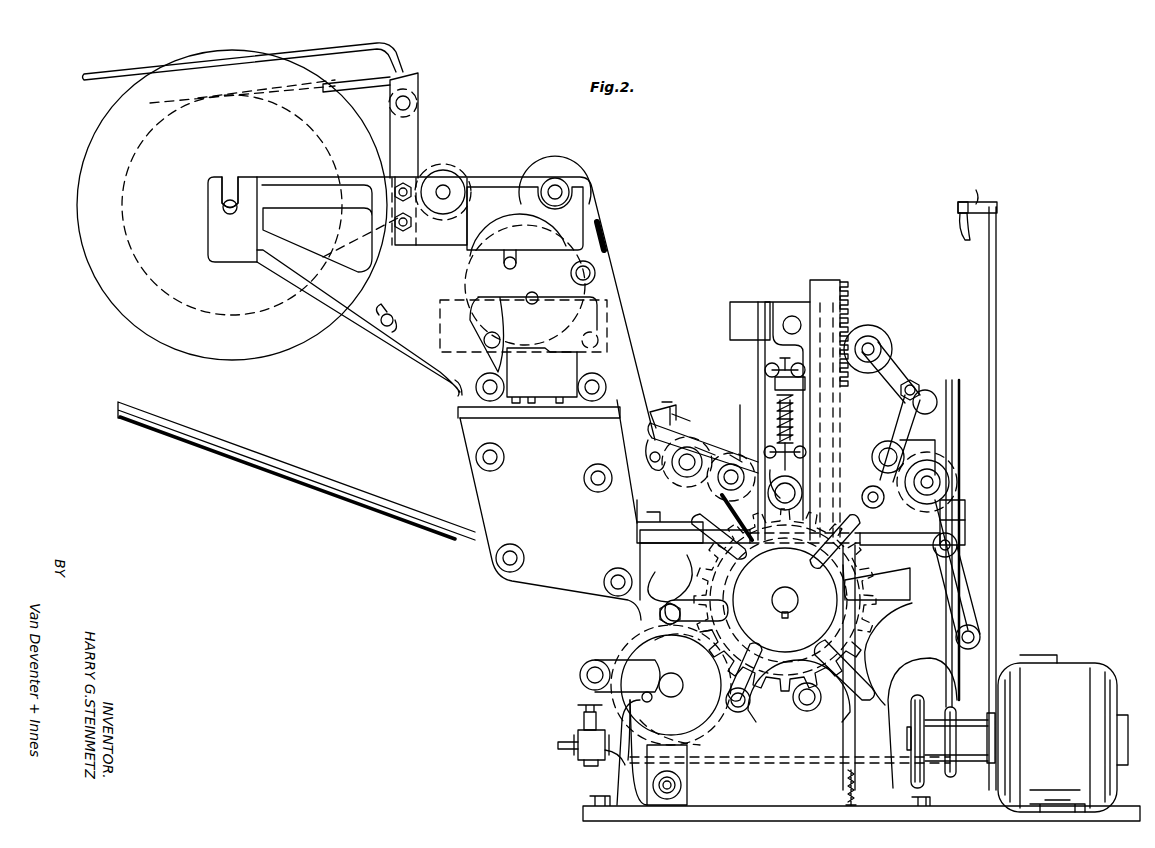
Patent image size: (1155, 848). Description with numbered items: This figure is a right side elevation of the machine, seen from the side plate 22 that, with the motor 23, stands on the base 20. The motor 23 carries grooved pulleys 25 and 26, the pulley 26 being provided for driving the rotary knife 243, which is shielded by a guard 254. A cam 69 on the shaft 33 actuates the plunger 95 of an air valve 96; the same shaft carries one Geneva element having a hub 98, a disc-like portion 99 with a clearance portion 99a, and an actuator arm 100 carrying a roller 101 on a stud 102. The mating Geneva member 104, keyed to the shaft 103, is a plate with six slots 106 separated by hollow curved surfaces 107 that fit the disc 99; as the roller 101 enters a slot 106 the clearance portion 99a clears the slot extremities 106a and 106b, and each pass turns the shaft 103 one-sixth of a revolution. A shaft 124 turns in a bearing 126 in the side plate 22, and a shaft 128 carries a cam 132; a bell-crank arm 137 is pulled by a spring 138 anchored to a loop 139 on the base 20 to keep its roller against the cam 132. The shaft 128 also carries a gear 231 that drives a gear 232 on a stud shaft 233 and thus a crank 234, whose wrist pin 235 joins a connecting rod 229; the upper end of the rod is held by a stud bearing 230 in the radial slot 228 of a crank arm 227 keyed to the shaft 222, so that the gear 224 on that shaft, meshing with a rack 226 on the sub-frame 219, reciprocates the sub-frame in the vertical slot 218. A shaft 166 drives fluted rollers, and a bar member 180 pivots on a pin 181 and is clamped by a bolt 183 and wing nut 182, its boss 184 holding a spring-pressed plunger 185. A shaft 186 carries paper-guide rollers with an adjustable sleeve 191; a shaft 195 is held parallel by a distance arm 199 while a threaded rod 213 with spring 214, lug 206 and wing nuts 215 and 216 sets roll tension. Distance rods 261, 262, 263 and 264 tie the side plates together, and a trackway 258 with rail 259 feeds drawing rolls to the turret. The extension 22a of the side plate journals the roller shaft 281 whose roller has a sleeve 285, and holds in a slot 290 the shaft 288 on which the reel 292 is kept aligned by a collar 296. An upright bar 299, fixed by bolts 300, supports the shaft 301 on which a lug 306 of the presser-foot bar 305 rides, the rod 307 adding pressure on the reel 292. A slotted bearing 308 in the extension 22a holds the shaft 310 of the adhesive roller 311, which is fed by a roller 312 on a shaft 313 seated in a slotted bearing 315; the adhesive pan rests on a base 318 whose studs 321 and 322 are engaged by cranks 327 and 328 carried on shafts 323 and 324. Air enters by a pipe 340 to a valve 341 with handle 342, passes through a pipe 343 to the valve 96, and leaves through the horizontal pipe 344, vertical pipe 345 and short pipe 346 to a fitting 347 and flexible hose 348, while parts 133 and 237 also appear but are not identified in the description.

The base 20 is at (935, 810).
The side plate 22 is at (630, 780).
The extension 22a is at (410, 342).
The motor 23 is at (1068, 680).
The grooved pulley 25 is at (912, 695).
The grooved pulley 26 is at (955, 705).
The shaft 33 is at (675, 695).
The cam 69 is at (735, 730).
The plunger 95 is at (652, 780).
The air valve 96 is at (690, 782).
The hub 98 is at (642, 699).
The disc-like portion 99 is at (624, 745).
The clearance portion 99a is at (645, 615).
The actuator arm 100 is at (615, 660).
The roller 101 is at (580, 677).
The stud 102 is at (588, 672).
The shaft 103 is at (780, 605).
The Geneva member 104 is at (740, 528).
The slots 106 is at (700, 530).
The slot extremity 106a is at (680, 672).
The slot extremity 106b is at (668, 600).
The hollow curved surfaces 107 is at (866, 645).
The shaft 124 is at (804, 712).
The bearing 126 is at (812, 710).
The shaft 128 is at (948, 478).
The cam 132 is at (875, 508).
The roller 133 is at (958, 548).
The arm 137 is at (905, 568).
The spring 138 is at (857, 782).
The loop 139 is at (846, 802).
The shaft 166 is at (700, 445).
The bar member 180 is at (695, 428).
The pivot pin 181 is at (742, 425).
The wing nut 182 is at (666, 402).
The bolt 183 is at (668, 440).
The boss 184 is at (736, 455).
The spring-pressed plunger 185 is at (733, 464).
The shaft 186 is at (676, 470).
The sleeve portion 191 is at (660, 512).
The shaft 195 is at (780, 505).
The distance arm 199 is at (970, 520).
The lug 206 is at (796, 397).
The threaded rod 213 is at (796, 427).
The spring 214 is at (796, 412).
The wing nut 215 is at (806, 452).
The second wing nut 216 is at (786, 362).
The vertical slot 218 is at (828, 290).
The sub-frame member 219 is at (810, 283).
The shaft 222 is at (888, 360).
The gear 224 is at (882, 330).
The rack 226 is at (850, 296).
The crank arm 227 is at (902, 378).
The radial slot 228 is at (932, 392).
The connecting rod 229 is at (908, 451).
The stud bearing 230 is at (913, 380).
The gear 231 is at (966, 507).
The gear 232 is at (962, 440).
The stud shaft 233 is at (880, 460).
The crank 234 is at (860, 548).
The wrist pin 235 is at (838, 552).
The link 237 is at (940, 553).
The rotary knife 243 is at (758, 355).
The guard 254 is at (730, 318).
The trackway 258 is at (282, 480).
The rail 259 is at (238, 445).
The distance rod 261 is at (612, 572).
The distance rod 262 is at (514, 552).
The distance rod 263 is at (494, 452).
The distance rod 264 is at (584, 480).
The shaft 281 is at (450, 188).
The sleeve portion 285 is at (430, 168).
The shaft 288 is at (226, 210).
The slot 290 is at (240, 183).
The reel 292 is at (96, 270).
The outside collar 296 is at (228, 178).
The bar 299 is at (420, 160).
The bolts 300 is at (396, 190).
The shaft 301 is at (410, 102).
The second bar 305 is at (345, 90).
The lug 306 is at (418, 80).
The rod 307 is at (322, 56).
The slotted bearing 308 is at (572, 165).
The shaft 310 is at (555, 184).
The roller 311 is at (595, 180).
The roller 312 is at (606, 225).
The shaft 313 is at (505, 266).
The slotted bearing 315 is at (512, 256).
The base 318 is at (572, 330).
The stud 321 is at (498, 345).
The stud 322 is at (585, 348).
The shaft 323 is at (476, 392).
The shaft 324 is at (600, 382).
The crank 327 is at (455, 383).
The crank 328 is at (575, 390).
The pipe 340 is at (558, 745).
The valve 341 is at (578, 738).
The handle 342 is at (578, 705).
The pipe 343 is at (618, 760).
The horizontal pipe 344 is at (938, 778).
The vertical pipe 345 is at (998, 325).
The horizontal pipe 346 is at (973, 183).
The fitting 347 is at (957, 208).
The flexible hose 348 is at (958, 232).